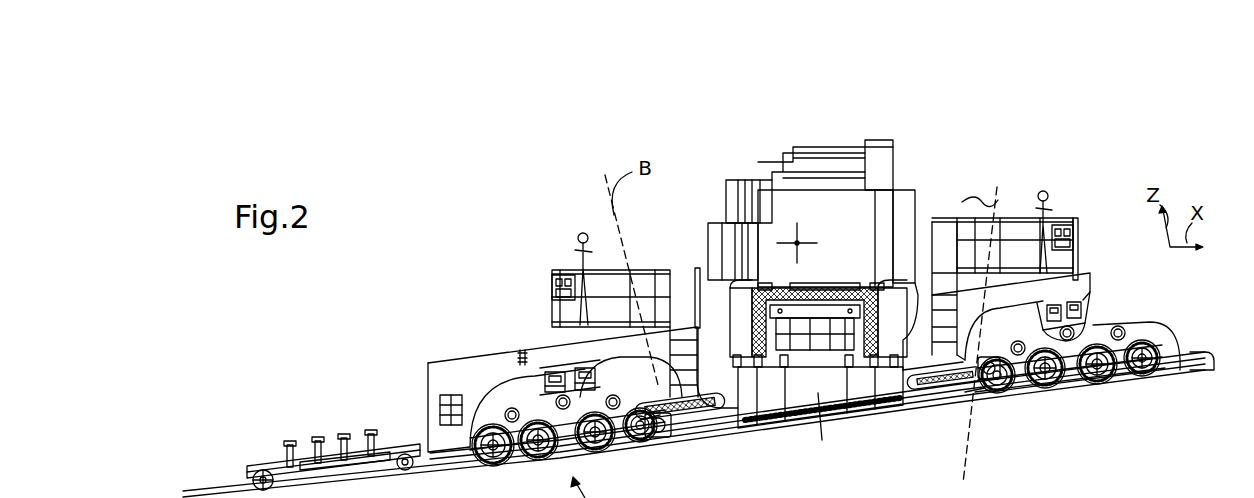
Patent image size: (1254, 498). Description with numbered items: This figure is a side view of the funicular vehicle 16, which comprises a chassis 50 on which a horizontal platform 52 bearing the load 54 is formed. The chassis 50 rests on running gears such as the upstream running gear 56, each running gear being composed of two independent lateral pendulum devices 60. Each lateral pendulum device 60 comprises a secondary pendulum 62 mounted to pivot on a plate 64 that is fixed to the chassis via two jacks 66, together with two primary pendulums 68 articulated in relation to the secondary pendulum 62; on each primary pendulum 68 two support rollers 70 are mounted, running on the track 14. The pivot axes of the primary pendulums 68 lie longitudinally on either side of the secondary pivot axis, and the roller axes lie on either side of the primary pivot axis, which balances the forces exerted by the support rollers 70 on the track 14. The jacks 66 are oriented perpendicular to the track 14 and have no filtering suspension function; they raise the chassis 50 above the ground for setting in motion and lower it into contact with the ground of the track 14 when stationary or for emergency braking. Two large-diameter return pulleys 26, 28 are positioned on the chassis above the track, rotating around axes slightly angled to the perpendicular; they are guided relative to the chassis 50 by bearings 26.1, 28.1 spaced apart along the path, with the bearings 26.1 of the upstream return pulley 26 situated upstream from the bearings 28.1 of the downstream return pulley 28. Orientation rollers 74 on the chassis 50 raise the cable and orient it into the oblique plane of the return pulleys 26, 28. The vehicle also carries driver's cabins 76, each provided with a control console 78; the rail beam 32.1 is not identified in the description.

The track 14 is at (184, 497).
The vehicle 16 is at (973, 165).
The upstream return pulley 26 is at (940, 385).
The bearings of the upstream return pulley 26.1 is at (970, 393).
The downstream return pulley 28 is at (690, 412).
The bearings of the downstream return pulley 28.1 is at (667, 447).
The rail beam 32.1 is at (1193, 357).
The chassis 50 is at (460, 370).
The horizontal platform 52 is at (832, 370).
The load 54 is at (832, 215).
The upstream running gear 56 is at (1077, 438).
The lateral pendulum device 60 is at (497, 397).
The secondary pendulum 62 is at (537, 403).
The plate 64 is at (577, 398).
The jack 66 is at (560, 372).
The primary pendulum 68 is at (493, 417).
The support roller 70 is at (595, 440).
The orientation roller 74 is at (633, 407).
The driver's cabin 76 is at (558, 272).
The control console 78 is at (552, 282).